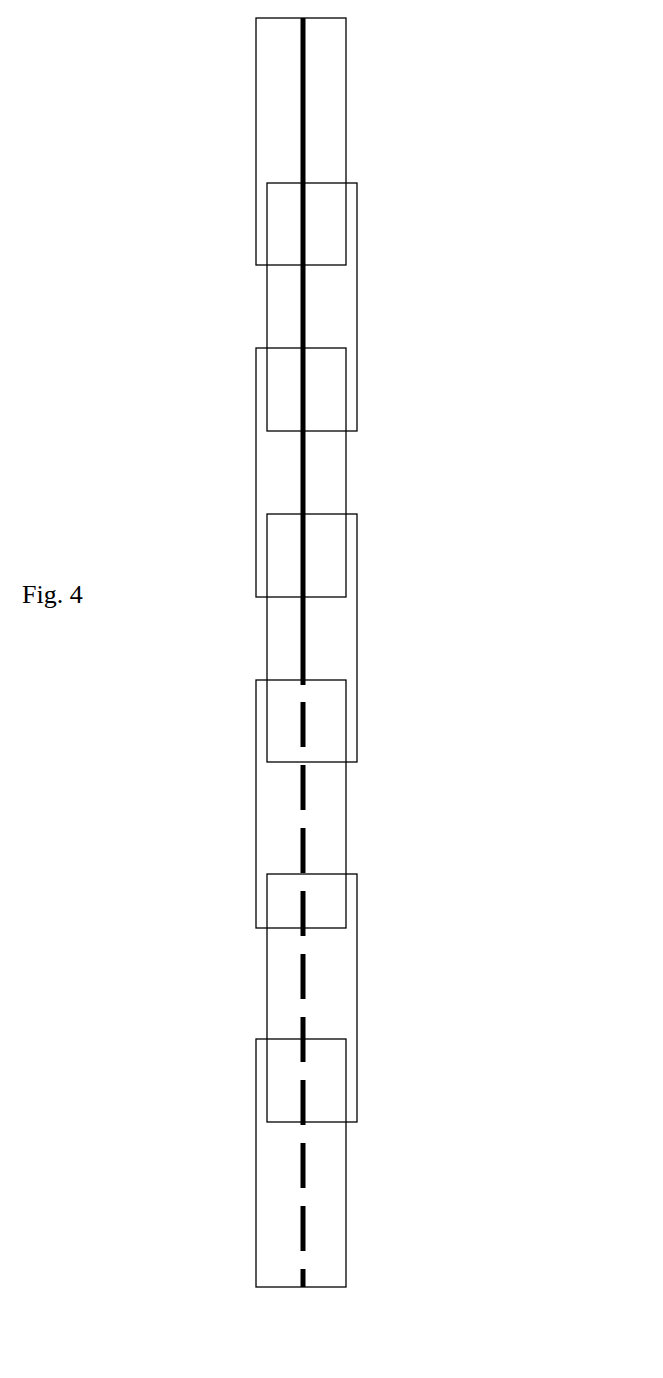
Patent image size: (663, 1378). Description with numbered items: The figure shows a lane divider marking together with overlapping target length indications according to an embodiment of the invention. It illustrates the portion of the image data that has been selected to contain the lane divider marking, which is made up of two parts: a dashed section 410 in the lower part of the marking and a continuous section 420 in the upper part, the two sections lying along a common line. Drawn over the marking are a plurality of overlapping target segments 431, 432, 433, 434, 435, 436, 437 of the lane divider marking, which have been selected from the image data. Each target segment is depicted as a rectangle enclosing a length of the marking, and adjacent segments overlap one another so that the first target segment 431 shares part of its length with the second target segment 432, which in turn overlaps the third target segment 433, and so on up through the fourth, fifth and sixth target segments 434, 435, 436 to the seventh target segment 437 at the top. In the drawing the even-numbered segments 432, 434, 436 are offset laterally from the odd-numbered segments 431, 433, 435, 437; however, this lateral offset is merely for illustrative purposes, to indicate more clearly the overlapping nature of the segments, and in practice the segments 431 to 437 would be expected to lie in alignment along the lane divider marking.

The dashed section 410 is at (300, 1165).
The continuous section 420 is at (302, 145).
The overlapping target segment 431 is at (323, 1163).
The overlapping target segment 432 is at (335, 998).
The overlapping target segment 433 is at (323, 804).
The overlapping target segment 434 is at (335, 638).
The overlapping target segment 435 is at (323, 472).
The overlapping target segment 436 is at (335, 307).
The overlapping target segment 437 is at (323, 141).